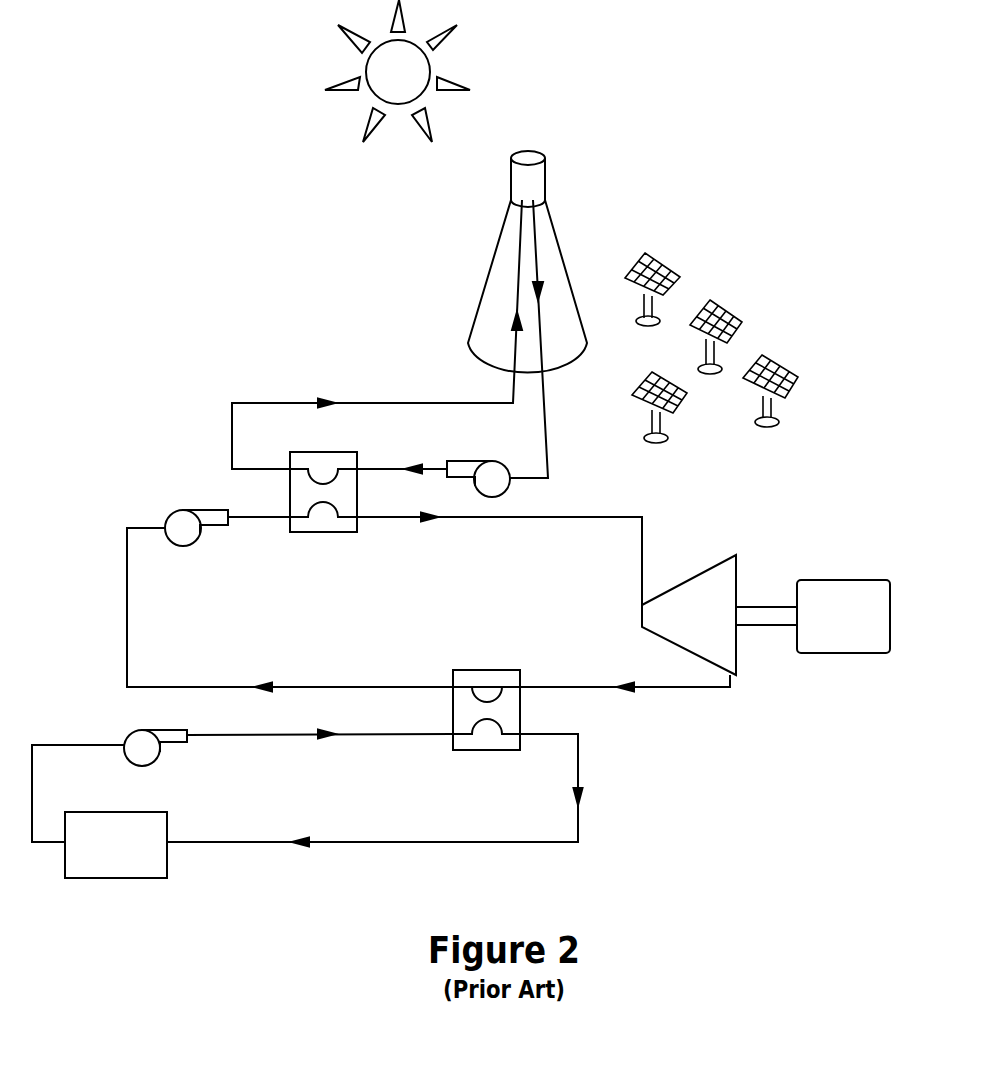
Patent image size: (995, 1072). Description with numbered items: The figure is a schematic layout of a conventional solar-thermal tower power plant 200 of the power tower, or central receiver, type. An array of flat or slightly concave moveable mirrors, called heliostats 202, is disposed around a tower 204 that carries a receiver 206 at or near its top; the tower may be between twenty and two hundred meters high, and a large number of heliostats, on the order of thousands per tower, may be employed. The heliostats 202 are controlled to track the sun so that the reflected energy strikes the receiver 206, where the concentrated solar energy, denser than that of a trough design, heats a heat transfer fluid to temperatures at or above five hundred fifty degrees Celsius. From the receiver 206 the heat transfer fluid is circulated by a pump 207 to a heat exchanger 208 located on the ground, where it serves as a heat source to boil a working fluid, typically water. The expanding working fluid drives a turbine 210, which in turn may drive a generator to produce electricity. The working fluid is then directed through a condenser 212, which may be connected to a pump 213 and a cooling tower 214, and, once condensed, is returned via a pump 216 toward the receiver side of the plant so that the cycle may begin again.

The tower power plant 200 is at (180, 125).
The heliostats 202 is at (722, 320).
The tower 204 is at (480, 300).
The receiver 206 is at (528, 182).
The pump 207 is at (510, 494).
The heat exchanger 208 is at (290, 487).
The turbine 210 is at (687, 580).
The condenser 212 is at (522, 710).
The pump 213 is at (132, 730).
The cooling tower 214 is at (105, 858).
The pump 216 is at (172, 512).